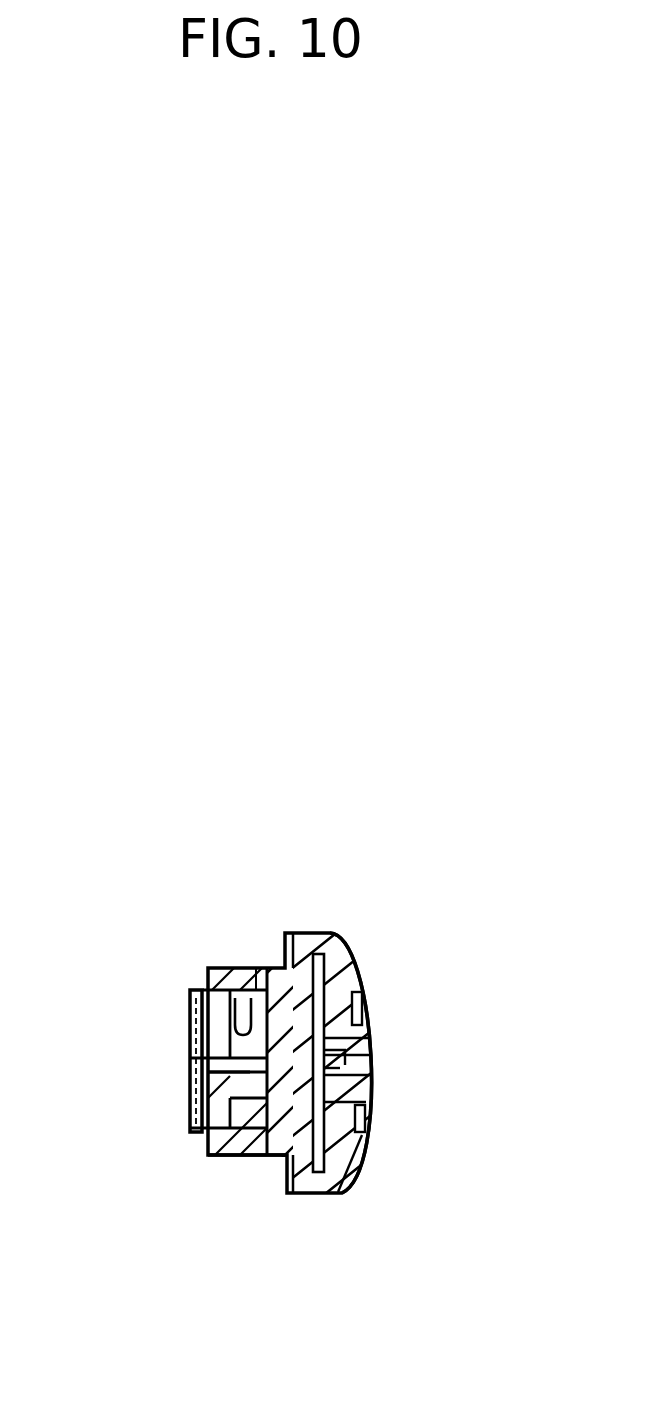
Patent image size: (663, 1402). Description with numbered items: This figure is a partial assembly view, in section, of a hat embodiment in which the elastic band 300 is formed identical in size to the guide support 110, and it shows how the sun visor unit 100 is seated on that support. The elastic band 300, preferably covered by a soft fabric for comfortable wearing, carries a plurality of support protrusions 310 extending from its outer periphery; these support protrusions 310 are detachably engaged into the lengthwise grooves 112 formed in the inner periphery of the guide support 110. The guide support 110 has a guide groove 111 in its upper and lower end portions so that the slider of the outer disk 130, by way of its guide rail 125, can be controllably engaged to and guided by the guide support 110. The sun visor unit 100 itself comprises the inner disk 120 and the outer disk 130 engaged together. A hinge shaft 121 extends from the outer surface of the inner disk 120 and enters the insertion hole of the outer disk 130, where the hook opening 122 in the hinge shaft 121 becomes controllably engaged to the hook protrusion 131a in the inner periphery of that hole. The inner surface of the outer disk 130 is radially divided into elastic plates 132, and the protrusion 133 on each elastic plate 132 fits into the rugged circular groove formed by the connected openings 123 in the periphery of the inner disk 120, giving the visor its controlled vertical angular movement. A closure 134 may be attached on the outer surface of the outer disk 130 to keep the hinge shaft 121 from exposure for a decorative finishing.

The sun visor unit 100 is at (345, 902).
The guide support 110 is at (207, 972).
The groove 111 is at (262, 968).
The lengthwise groove 112 is at (235, 1070).
The inner disk 120 is at (268, 966).
The hinge shaft 121 is at (340, 1068).
The hook opening 122 is at (345, 1057).
The openings 123 is at (262, 1158).
The guide rail 125 is at (218, 968).
The outer disk 130 is at (347, 965).
The hook protrusion 131a is at (365, 1040).
The elastic plate 132 is at (358, 1150).
The protrusion 133 is at (366, 1114).
The closure 134 is at (368, 1007).
The elastic band 300 is at (189, 1005).
The support protrusion 310 is at (245, 1056).